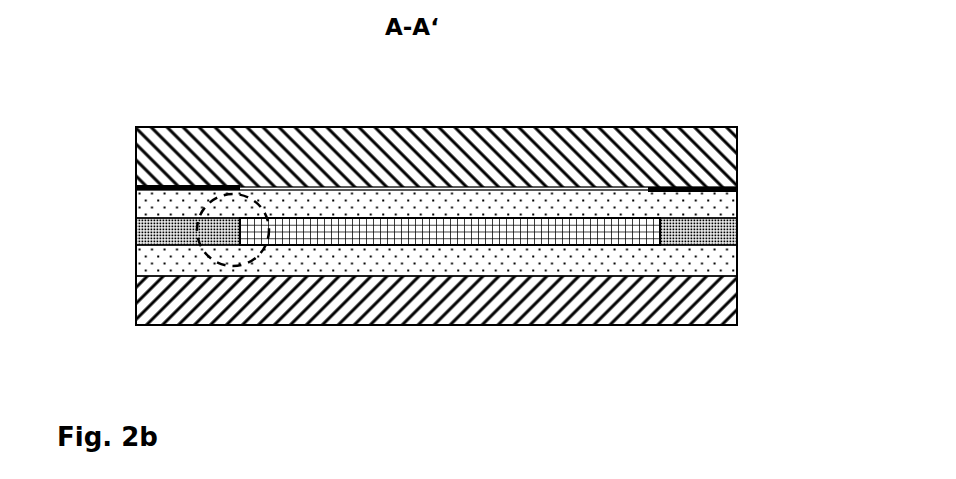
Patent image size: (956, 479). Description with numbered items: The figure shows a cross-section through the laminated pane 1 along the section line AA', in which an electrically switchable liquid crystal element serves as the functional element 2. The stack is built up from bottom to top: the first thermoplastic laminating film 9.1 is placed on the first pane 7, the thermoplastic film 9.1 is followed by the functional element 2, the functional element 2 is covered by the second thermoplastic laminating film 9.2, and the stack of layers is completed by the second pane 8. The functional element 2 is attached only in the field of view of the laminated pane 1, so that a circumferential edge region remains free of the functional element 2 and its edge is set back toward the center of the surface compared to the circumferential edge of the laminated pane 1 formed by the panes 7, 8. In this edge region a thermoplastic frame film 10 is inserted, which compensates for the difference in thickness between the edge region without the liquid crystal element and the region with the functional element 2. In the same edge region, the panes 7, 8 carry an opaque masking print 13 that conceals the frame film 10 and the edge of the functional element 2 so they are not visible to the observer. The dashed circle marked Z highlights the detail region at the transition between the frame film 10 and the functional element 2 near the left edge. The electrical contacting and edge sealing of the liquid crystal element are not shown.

The laminated pane 1 is at (228, 89).
The functional element 2 is at (508, 230).
The first pane 7 is at (213, 317).
The second pane 8 is at (135, 147).
The first thermoplastic laminating film 9.1 is at (723, 262).
The second thermoplastic laminating film 9.2 is at (713, 200).
The thermoplastic frame film 10 is at (135, 233).
The opaque masking print 13 is at (135, 188).
The detail region Z is at (246, 258).